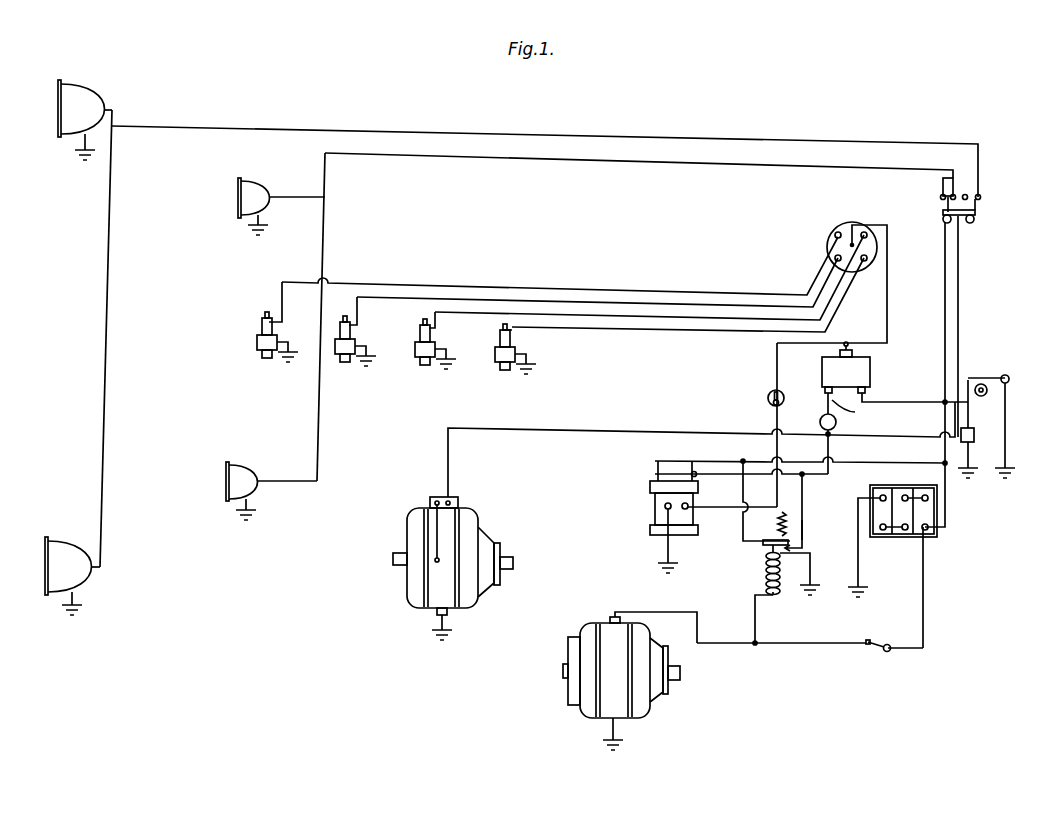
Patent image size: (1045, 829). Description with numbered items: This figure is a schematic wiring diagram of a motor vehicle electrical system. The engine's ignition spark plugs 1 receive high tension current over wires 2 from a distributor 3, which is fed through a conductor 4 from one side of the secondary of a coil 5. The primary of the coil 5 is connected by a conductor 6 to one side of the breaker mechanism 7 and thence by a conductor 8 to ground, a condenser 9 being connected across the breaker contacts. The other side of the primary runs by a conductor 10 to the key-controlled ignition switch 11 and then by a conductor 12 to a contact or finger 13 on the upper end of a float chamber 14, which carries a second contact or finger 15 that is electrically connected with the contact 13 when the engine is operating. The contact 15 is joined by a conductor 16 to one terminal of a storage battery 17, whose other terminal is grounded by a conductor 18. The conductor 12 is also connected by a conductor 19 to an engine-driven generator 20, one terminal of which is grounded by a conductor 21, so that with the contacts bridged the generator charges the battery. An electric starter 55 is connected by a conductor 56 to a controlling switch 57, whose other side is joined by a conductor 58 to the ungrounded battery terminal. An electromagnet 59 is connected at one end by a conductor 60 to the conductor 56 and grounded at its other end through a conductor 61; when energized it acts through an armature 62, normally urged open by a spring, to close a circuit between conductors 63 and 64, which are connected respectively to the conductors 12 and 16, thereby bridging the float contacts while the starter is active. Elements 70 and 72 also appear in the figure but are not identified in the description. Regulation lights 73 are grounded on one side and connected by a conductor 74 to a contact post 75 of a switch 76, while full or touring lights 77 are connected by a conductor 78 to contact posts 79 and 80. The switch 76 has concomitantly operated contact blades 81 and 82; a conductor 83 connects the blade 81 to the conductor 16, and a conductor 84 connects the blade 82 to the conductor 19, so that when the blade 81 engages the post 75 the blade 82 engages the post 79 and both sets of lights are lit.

The ignition spark plugs 1 is at (485, 366).
The wires 2 is at (672, 332).
The distributor 3 is at (855, 214).
The conductor 4 is at (888, 304).
The coil 5 is at (870, 371).
The conductor 6 is at (926, 402).
The breaker mechanism 7 is at (969, 373).
The conductor 8 is at (1005, 425).
The condenser 9 is at (968, 428).
The conductor 10 is at (855, 412).
The ignition switch 11 is at (836, 426).
The conductor 12 is at (808, 478).
The contact or finger 13 is at (690, 471).
The float chamber 14 is at (652, 500).
The second contact or finger 15 is at (662, 470).
The conductor 16 is at (947, 481).
The storage battery 17 is at (908, 540).
The conductor 18 is at (858, 547).
The conductor 19 is at (591, 431).
The generator 20 is at (480, 520).
The conductor 21 is at (448, 630).
The electric starter 55 is at (605, 622).
The conductor 56 is at (815, 646).
The controlling switch 57 is at (878, 653).
The conductor 58 is at (925, 606).
The electromagnet 59 is at (765, 565).
The conductor 60 is at (757, 621).
The conductor 61 is at (813, 582).
The armature 62 is at (762, 530).
The conductor 63 is at (804, 528).
The conductor 64 is at (741, 541).
The conductor 70 is at (727, 510).
The indicator 72 is at (768, 397).
The regulation lights 73 is at (665, 545).
The conductor 74 is at (695, 163).
The contact post 75 is at (961, 193).
The switch 76 is at (978, 207).
The full lights or touring lights 77 is at (45, 567).
The conductor 78 is at (770, 141).
The contact post 79 is at (981, 198).
The contact post 80 is at (941, 195).
The contact blade 81 is at (945, 205).
The contact blade 82 is at (975, 220).
The conductor 83 is at (945, 318).
The conductor 84 is at (960, 323).